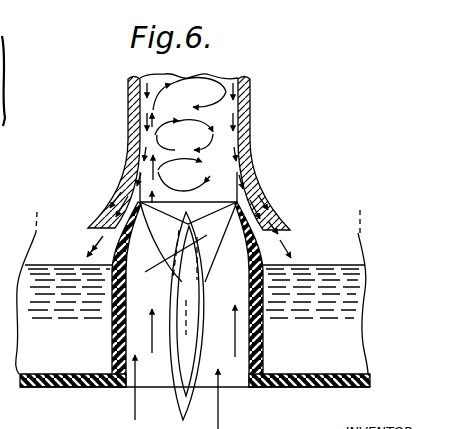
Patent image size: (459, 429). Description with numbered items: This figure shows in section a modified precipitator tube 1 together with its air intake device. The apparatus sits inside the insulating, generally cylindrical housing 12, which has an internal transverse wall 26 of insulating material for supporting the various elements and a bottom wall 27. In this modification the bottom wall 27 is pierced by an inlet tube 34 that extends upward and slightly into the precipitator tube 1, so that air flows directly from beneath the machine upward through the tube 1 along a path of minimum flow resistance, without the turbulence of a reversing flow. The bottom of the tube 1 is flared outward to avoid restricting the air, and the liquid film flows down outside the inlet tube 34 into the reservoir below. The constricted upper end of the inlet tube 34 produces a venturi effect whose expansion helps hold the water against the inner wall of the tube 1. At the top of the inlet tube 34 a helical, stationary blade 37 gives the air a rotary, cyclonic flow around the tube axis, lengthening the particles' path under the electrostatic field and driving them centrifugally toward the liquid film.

The precipitator tube 1 is at (128, 104).
The housing 12 is at (365, 258).
The internal transverse wall 26 is at (11, 100).
The bottom wall 27 is at (62, 387).
The inlet tube 34 is at (264, 333).
The helical stationary blade 37 is at (163, 244).